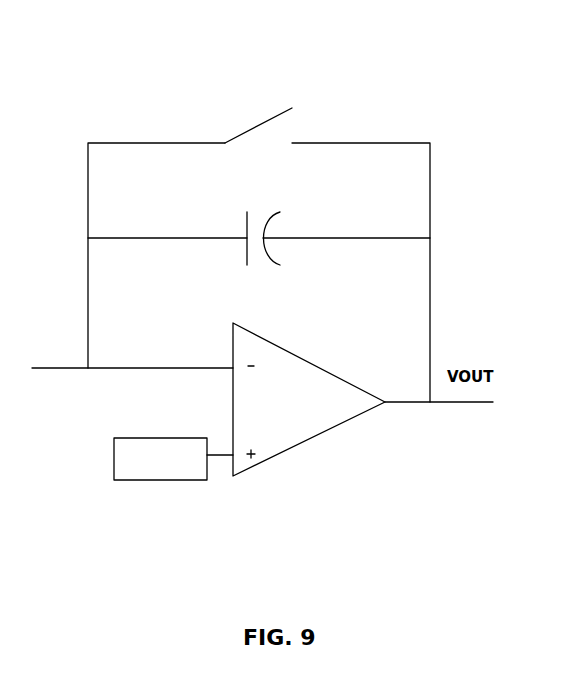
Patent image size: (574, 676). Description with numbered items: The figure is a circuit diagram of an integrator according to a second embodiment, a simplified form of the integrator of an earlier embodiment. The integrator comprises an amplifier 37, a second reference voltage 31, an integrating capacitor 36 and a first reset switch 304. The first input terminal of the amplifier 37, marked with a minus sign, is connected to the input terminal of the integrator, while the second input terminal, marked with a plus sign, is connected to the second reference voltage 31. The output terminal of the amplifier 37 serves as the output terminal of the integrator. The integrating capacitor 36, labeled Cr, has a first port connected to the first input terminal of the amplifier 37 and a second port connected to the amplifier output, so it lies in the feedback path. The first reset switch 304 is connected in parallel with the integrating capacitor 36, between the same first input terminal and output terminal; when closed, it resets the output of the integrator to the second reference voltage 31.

The first reset switch 304 is at (275, 102).
The integrating capacitor 36 is at (288, 202).
The amplifier 37 is at (320, 437).
The second reference voltage 31 is at (200, 480).